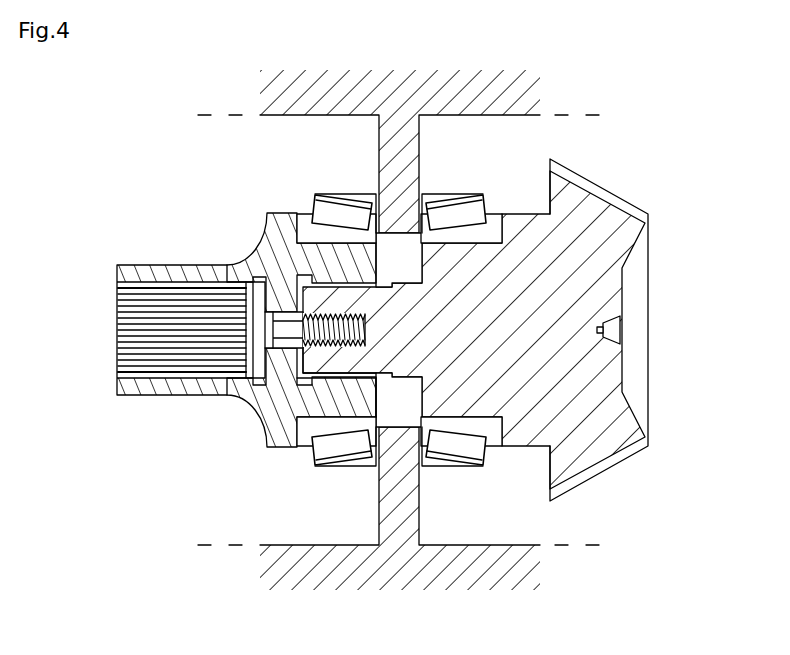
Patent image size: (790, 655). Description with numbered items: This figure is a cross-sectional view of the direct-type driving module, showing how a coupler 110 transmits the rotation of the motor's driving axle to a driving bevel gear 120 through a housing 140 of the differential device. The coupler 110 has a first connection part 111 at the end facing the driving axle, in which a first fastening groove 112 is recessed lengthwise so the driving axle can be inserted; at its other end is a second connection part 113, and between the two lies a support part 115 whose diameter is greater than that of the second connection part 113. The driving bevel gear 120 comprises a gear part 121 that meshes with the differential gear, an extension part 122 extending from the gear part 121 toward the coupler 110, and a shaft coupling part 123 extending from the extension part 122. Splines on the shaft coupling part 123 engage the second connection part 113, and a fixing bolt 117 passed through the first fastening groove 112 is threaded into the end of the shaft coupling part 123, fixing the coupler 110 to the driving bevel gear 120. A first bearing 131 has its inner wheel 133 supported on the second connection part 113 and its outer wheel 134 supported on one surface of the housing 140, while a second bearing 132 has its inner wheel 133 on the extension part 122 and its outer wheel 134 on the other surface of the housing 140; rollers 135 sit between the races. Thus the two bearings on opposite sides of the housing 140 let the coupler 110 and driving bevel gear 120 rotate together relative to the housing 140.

The coupler 110 is at (272, 487).
The first connection part 111 is at (143, 388).
The first fastening groove 112 is at (125, 346).
The second connection part 113 is at (335, 408).
The support part 115 is at (272, 417).
The fixing bolt 117 is at (320, 312).
The driving bevel gear 120 is at (677, 270).
The gear part 121 is at (603, 203).
The extension part 122 is at (488, 432).
The shaft coupling part 123 is at (350, 358).
The first bearing 131 is at (345, 135).
The second bearing 132 is at (466, 206).
The inner wheel 133 is at (308, 218).
The outer wheel 134 is at (363, 193).
The roller 135 is at (340, 210).
The housing 140 is at (413, 155).